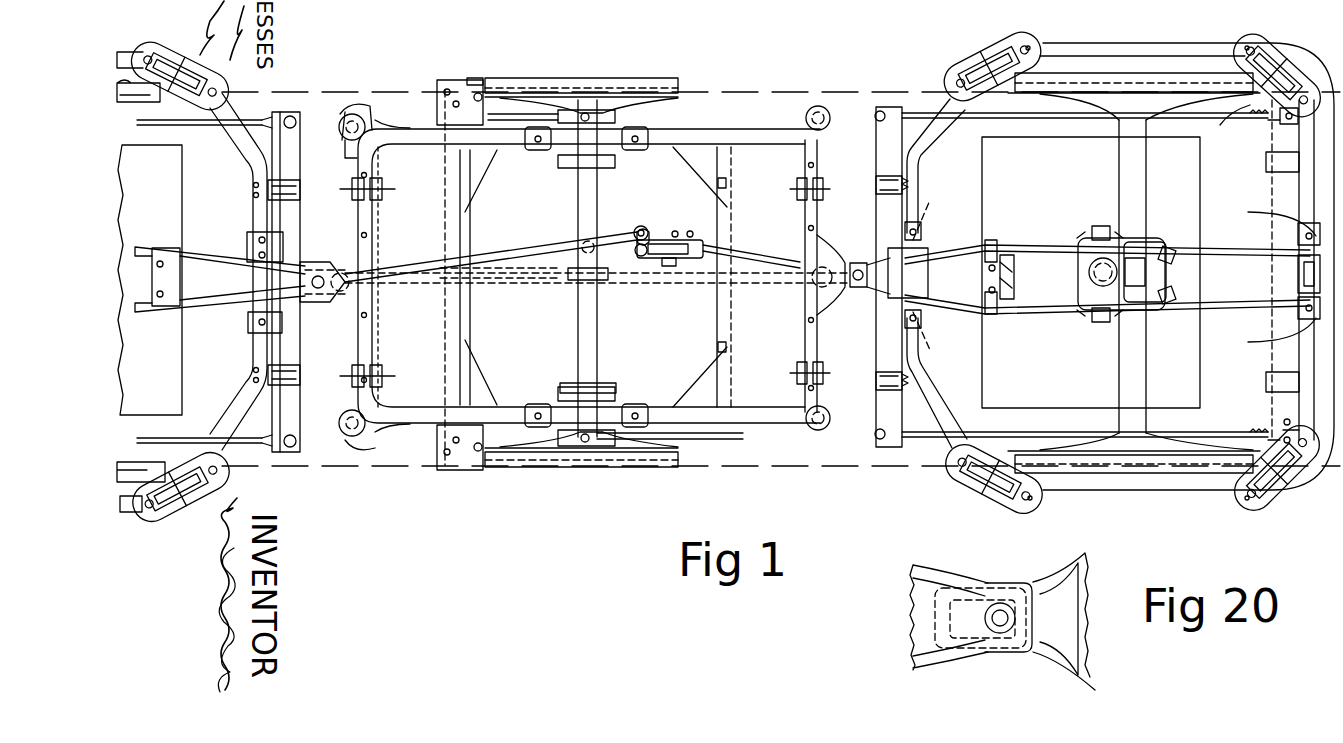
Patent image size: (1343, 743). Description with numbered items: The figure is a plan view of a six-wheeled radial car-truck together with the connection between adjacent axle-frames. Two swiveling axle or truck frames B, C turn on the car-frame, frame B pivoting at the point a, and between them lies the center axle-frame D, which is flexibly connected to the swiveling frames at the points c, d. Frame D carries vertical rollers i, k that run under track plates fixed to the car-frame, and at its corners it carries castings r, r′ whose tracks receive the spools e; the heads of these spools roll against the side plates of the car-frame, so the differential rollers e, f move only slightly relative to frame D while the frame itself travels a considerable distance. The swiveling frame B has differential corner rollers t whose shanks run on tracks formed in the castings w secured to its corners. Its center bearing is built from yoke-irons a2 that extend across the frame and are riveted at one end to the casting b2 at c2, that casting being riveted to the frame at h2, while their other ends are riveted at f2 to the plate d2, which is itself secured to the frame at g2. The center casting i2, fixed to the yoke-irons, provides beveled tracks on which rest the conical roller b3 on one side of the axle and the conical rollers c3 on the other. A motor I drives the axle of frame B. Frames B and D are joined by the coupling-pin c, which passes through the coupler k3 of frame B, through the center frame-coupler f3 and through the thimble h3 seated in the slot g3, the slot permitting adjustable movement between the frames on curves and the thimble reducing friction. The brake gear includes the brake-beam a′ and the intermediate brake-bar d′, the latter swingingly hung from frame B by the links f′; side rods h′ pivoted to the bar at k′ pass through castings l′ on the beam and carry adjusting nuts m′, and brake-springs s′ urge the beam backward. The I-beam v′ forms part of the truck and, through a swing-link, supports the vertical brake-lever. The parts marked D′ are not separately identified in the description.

In FIG. 1, the axle-frame C is at (162, 280).
In FIG. 1, the center axle-frame D is at (589, 276).
In FIG. 1, the frame side member D′ is at (386, 318).
In FIG. 1, the axle-frame B is at (1187, 266).
In FIG. 1, the motor I is at (1091, 272).
In FIG. 1, the rollers t is at (970, 490).
In FIG. 1, the casting w is at (962, 80).
In FIG. 1, the differential roller f is at (339, 127).
In FIG. 1, the spool e is at (830, 118).
In FIG. 1, the casting r is at (375, 121).
In FIG. 1, the casting r′ is at (372, 430).
In FIG. 1, the vertical roller k is at (384, 187).
In FIG. 1, the vertical roller i is at (795, 188).
In FIG. 1, the connection point d is at (318, 274).
In FIG. 1, the center frame-coupler f3 is at (340, 294).
In FIG. 20, the center frame-coupler f3 is at (1064, 621).
In FIG. 1, the I-beam v′ is at (500, 286).
In FIG. 1, the coupling-pin c is at (855, 262).
In FIG. 20, the coupling-pin c is at (996, 604).
In FIG. 1, the coupler k3 is at (866, 286).
In FIG. 20, the coupler k3 is at (925, 600).
In FIG. 1, the pivot connection k′ is at (884, 110).
In FIG. 1, the intermediate brake-bar d′ is at (878, 166).
In FIG. 1, the links f′ is at (876, 185).
In FIG. 1, the rivet connection g2 is at (1078, 258).
In FIG. 1, the casting d2 is at (926, 238).
In FIG. 1, the yoke-irons a2 is at (1038, 246).
In FIG. 1, the conical rollers c3 is at (1100, 228).
In FIG. 1, the center casting i2 is at (1148, 246).
In FIG. 1, the side rods h′ is at (1220, 118).
In FIG. 1, the nuts m′ is at (1259, 286).
In FIG. 1, the plates or castings l′ is at (1300, 118).
In FIG. 1, the brake-springs s′ is at (1296, 166).
In FIG. 1, the rivet connection h2 is at (1277, 271).
In FIG. 1, the casting b2 is at (1296, 236).
In FIG. 1, the conical roller b3 is at (1178, 272).
In FIG. 1, the rivet connection c2 is at (1296, 274).
In FIG. 1, the swiveling point a is at (1088, 272).
In FIG. 1, the rivet connection f2 is at (988, 270).
In FIG. 1, the brake-beam a′ is at (1298, 322).
In FIG. 20, the thimble h3 is at (1006, 604).
In FIG. 20, the slot g3 is at (983, 617).